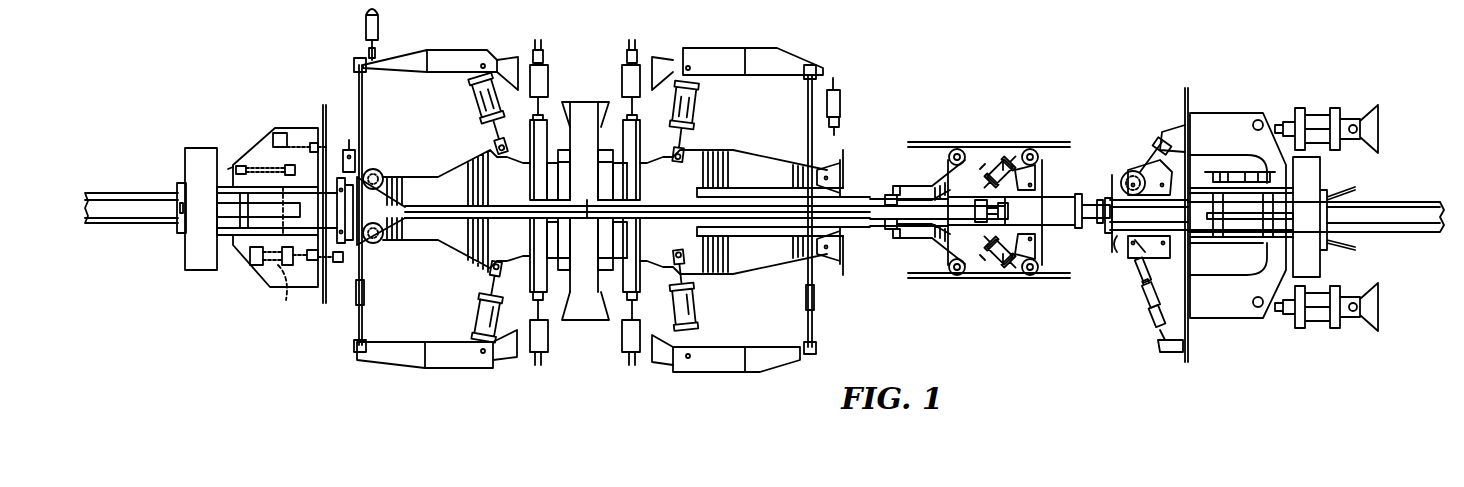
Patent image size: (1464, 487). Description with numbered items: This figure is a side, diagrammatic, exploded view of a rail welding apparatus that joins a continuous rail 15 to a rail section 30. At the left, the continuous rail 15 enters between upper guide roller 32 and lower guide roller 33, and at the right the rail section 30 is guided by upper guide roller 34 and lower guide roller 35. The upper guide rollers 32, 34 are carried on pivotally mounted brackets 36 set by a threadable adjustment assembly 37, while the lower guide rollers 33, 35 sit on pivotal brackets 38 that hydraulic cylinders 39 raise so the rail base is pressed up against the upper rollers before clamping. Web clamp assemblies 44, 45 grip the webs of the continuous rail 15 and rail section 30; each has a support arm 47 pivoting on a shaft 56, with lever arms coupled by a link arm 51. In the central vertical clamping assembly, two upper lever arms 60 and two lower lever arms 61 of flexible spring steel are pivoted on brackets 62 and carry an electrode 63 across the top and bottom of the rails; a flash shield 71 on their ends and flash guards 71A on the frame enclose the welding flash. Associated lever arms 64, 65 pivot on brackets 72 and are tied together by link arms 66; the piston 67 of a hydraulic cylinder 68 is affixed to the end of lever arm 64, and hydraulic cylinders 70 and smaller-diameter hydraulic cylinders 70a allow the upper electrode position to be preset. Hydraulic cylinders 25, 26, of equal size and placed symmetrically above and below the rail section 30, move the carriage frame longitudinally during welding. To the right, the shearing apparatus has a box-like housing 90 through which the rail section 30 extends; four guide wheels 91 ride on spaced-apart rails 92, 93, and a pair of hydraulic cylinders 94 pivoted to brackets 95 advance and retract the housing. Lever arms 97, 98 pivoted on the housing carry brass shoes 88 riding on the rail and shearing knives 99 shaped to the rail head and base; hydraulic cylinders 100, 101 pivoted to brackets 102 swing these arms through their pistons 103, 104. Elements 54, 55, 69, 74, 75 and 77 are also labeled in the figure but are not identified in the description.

The continuous rail 15 is at (152, 184).
The hydraulic cylinder 25 is at (1318, 108).
The hydraulic cylinder 26 is at (1320, 328).
The rail section 30 is at (1397, 234).
The upper guide roller 32 is at (385, 178).
The lower guide roller 33 is at (377, 242).
The upper guide roller 34 is at (1132, 170).
The lower guide roller 35 is at (1112, 247).
The pivotally mounted bracket 36 is at (377, 172).
The threadable adjustment assembly 37 is at (349, 152).
The pivotal bracket 38 is at (327, 273).
The hydraulic cylinder 39 is at (282, 284).
The web clamp assembly 44 is at (279, 110).
The web clamp assembly 45 is at (1355, 183).
The support arm 47 is at (1226, 231).
The link arm 51 is at (233, 165).
The upper jaw 54 is at (232, 165).
The lower jaw 55 is at (262, 236).
The shaft 56 is at (263, 217).
The upper lever arm 60 is at (469, 178).
The lower lever arm 61 is at (455, 245).
The bracket 62 is at (832, 168).
The electrode 63 is at (602, 186).
The lever arm 64 is at (451, 50).
The lever arm 65 is at (405, 367).
The link arm 66 is at (357, 325).
The piston 67 is at (368, 38).
The hydraulic cylinder 68 is at (365, 20).
The tie rod bracket 69 is at (846, 114).
The hydraulic cylinder 70 is at (472, 100).
The hydraulic cylinder 70a is at (482, 313).
The flash shield 71 is at (600, 142).
The flash guard 71A is at (603, 100).
The bracket 72 is at (512, 58).
The lower die guide 74 is at (528, 236).
The upper die guide 75 is at (530, 190).
The die cylinder 77 is at (548, 70).
The brass shoe 88 is at (898, 186).
The box-like housing 90 is at (1069, 144).
The guide wheel 91 is at (962, 149).
The rail 92 is at (935, 140).
The rail 93 is at (1070, 290).
The hydraulic cylinder 94 is at (1037, 219).
The bracket 95 is at (1100, 205).
The lever arm 97 is at (940, 182).
The lever arm 98 is at (905, 242).
The shearing knife 99 is at (890, 195).
The hydraulic cylinder 100 is at (1003, 159).
The hydraulic cylinder 101 is at (1010, 264).
The bracket 102 is at (1038, 180).
The piston 103 is at (999, 157).
The piston 104 is at (998, 264).